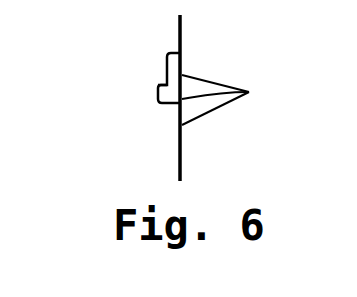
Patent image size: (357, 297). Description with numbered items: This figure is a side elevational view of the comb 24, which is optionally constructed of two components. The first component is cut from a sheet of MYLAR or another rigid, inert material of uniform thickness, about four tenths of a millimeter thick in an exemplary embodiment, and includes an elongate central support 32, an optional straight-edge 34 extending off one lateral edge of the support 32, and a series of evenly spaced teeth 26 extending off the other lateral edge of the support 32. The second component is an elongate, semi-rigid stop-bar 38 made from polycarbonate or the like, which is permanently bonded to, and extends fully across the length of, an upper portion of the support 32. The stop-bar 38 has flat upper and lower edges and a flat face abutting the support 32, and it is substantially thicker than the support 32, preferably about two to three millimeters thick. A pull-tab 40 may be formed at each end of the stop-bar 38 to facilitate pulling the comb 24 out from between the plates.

The comb 24 is at (82, 65).
The teeth 26 is at (182, 155).
The central support 32 is at (231, 100).
The straight-edge 34 is at (182, 30).
The stop-bar 38 is at (167, 63).
The pull-tab 40 is at (158, 93).